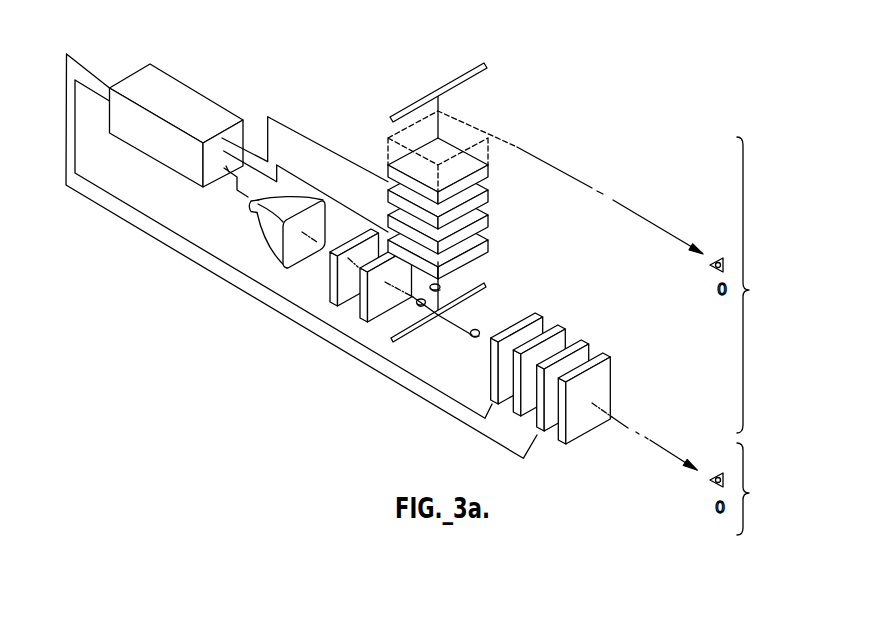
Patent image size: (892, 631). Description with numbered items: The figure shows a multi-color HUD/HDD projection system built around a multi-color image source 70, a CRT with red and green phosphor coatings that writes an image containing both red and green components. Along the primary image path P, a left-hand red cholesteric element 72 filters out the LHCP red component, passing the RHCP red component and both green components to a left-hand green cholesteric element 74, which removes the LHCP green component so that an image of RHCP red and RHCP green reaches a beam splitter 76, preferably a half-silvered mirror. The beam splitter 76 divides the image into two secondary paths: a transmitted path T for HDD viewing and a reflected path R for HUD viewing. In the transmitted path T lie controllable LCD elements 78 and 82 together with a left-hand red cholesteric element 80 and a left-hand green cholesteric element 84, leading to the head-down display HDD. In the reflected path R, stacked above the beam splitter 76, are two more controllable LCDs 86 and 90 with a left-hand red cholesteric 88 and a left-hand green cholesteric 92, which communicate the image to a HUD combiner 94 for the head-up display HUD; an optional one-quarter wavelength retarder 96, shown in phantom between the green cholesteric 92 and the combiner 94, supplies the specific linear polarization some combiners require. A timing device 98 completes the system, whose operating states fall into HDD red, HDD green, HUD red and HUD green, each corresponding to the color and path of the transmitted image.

The multi-color image source 70 is at (276, 254).
The left-hand red cholesteric element 72 is at (330, 298).
The left-hand green cholesteric element 74 is at (361, 317).
The beam splitter 76 is at (484, 291).
The controllable LCD element 78 is at (537, 319).
The left-hand red cholesteric element 80 is at (562, 334).
The controllable LCD element 82 is at (590, 350).
The left-hand green cholesteric element 84 is at (615, 373).
The controllable LCD 86 is at (489, 255).
The left-hand red cholesteric element 88 is at (489, 226).
The controllable LCD 90 is at (489, 201).
The left-hand green cholesteric element 92 is at (489, 176).
The HUD combiner 94 is at (485, 71).
The one-quarter wavelength retarder 96 is at (490, 150).
The timing device 98 is at (178, 80).
The primary image path P is at (416, 306).
The reflected path R is at (443, 290).
The transmitted path T is at (470, 336).
The head-up display HUD is at (759, 285).
The head-down display HDD is at (758, 489).